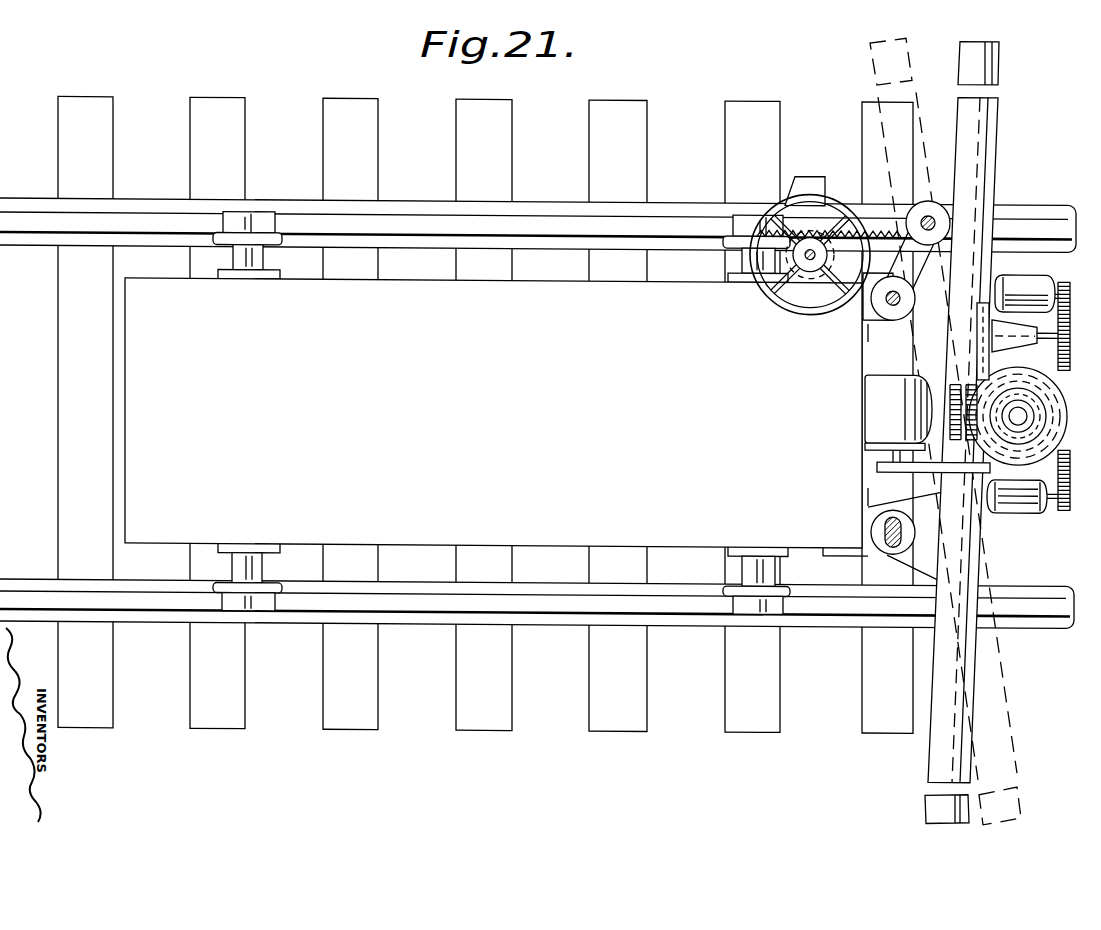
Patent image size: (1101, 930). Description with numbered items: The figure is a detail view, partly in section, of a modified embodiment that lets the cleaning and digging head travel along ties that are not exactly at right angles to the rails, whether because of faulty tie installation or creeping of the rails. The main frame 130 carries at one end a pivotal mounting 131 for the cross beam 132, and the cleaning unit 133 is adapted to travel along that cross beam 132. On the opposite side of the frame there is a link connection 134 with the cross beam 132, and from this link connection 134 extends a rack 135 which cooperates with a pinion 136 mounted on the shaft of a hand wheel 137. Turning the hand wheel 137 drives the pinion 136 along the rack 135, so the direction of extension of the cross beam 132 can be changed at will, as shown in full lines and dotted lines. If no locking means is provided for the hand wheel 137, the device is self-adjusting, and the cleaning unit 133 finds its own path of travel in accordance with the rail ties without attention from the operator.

The main frame 130 is at (496, 417).
The pivotal mounting 131 is at (882, 548).
The cross beam 132 is at (955, 673).
The cleaning unit 133 is at (1032, 478).
The link connection 134 is at (927, 262).
The rack 135 is at (865, 204).
The pinion 136 is at (803, 277).
The hand wheel 137 is at (756, 277).